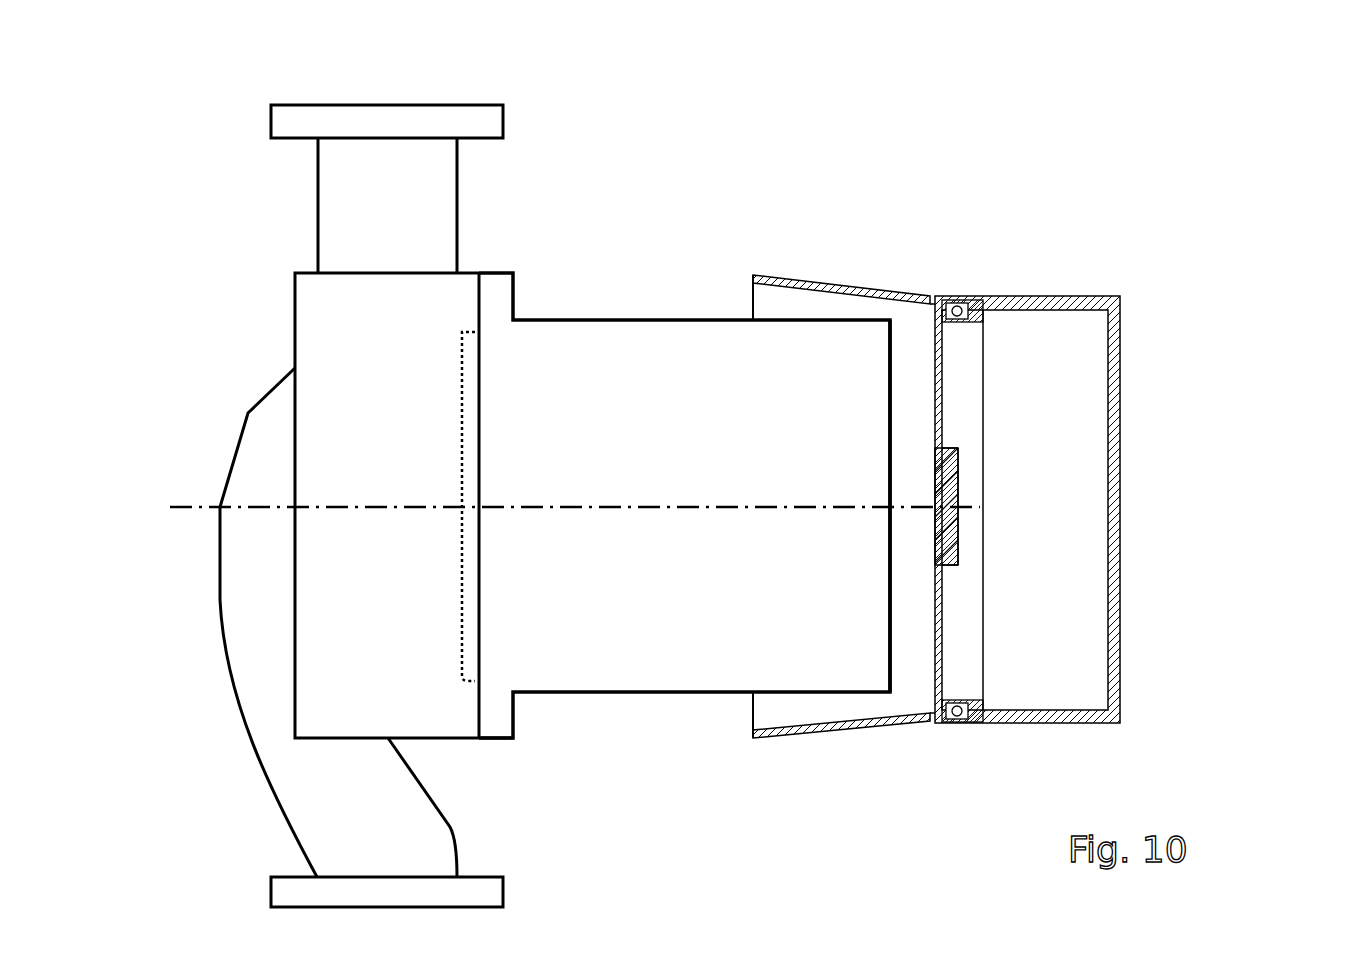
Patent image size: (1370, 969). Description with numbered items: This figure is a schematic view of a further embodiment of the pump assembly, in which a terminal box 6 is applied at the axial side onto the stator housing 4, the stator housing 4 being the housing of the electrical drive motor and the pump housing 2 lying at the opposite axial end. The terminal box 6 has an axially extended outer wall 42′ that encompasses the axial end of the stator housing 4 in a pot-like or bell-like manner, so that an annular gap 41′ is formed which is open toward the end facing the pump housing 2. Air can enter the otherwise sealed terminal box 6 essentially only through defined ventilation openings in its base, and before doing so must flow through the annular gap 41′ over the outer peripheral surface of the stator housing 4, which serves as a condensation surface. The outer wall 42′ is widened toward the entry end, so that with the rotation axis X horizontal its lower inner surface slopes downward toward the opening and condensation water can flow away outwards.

The pump housing 2 is at (513, 95).
The stator housing 4 is at (673, 302).
The terminal box 6 is at (1143, 417).
The annular gap 41′ is at (928, 336).
The outer wall 42′ is at (797, 745).
The rotation axis X is at (186, 503).